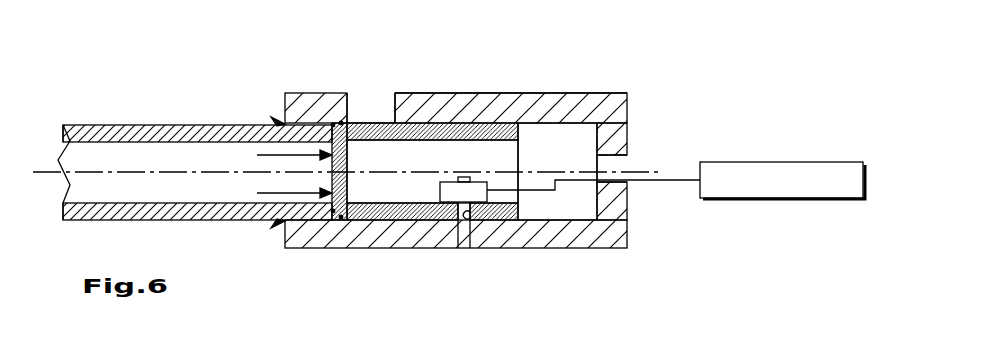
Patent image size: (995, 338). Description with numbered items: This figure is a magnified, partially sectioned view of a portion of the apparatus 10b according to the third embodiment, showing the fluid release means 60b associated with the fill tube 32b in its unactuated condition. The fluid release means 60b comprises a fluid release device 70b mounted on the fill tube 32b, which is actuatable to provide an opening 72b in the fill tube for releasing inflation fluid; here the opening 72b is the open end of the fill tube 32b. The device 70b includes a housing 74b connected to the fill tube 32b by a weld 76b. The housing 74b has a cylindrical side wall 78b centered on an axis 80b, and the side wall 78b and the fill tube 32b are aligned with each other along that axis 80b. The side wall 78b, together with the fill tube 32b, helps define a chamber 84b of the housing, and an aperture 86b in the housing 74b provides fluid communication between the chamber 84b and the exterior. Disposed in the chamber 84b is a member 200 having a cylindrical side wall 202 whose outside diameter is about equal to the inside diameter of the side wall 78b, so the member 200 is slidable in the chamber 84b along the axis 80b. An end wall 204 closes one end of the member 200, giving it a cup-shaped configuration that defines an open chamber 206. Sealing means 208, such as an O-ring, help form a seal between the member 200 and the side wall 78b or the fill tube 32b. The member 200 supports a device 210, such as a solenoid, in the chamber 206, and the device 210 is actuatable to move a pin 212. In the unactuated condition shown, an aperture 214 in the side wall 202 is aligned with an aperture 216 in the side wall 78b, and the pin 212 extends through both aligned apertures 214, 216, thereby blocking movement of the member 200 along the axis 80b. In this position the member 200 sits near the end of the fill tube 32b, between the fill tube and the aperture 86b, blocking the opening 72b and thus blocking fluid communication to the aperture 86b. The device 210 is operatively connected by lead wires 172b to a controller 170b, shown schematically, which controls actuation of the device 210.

The apparatus 10b is at (528, 163).
The fill tube 32b is at (143, 134).
The fluid release means 60b is at (690, 40).
The fluid release device 70b is at (713, 78).
The opening 72b is at (367, 222).
The housing 74b is at (502, 110).
The weld 76b is at (283, 122).
The cylindrical side wall 78b is at (468, 110).
The axis 80b is at (46, 172).
The chamber 84b is at (568, 140).
The aperture 86b is at (355, 100).
The controller 170b is at (780, 198).
The lead wires 172b is at (652, 182).
The member 200 is at (367, 140).
The cylindrical side wall 202 is at (443, 138).
The end wall 204 is at (345, 182).
The open chamber 206 is at (428, 143).
The sealing means 208 is at (341, 218).
The device 210 is at (450, 197).
The pin 212 is at (464, 250).
The aperture 214 is at (471, 223).
The aperture 216 is at (471, 252).